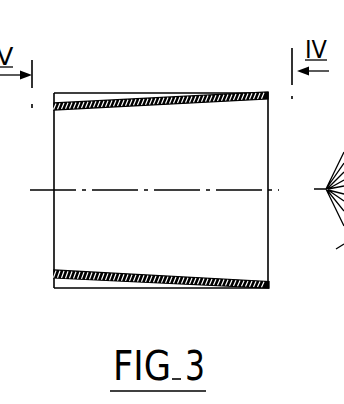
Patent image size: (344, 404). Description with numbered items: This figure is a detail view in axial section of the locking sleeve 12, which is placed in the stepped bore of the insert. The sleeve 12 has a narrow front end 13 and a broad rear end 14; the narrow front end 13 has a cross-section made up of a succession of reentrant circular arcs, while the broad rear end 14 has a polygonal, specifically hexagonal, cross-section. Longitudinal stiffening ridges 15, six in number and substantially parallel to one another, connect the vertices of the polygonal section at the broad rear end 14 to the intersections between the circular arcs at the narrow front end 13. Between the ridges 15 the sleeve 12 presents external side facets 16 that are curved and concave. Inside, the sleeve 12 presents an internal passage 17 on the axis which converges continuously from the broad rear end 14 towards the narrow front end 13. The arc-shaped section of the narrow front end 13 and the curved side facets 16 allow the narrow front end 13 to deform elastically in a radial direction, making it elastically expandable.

The locking sleeve 12 is at (168, 70).
The narrow front end 13 is at (55, 250).
The broad rear end 14 is at (269, 262).
The longitudinal stiffening ridges 15 is at (183, 92).
The external side facets 16 is at (77, 99).
The internal passage 17 is at (183, 166).